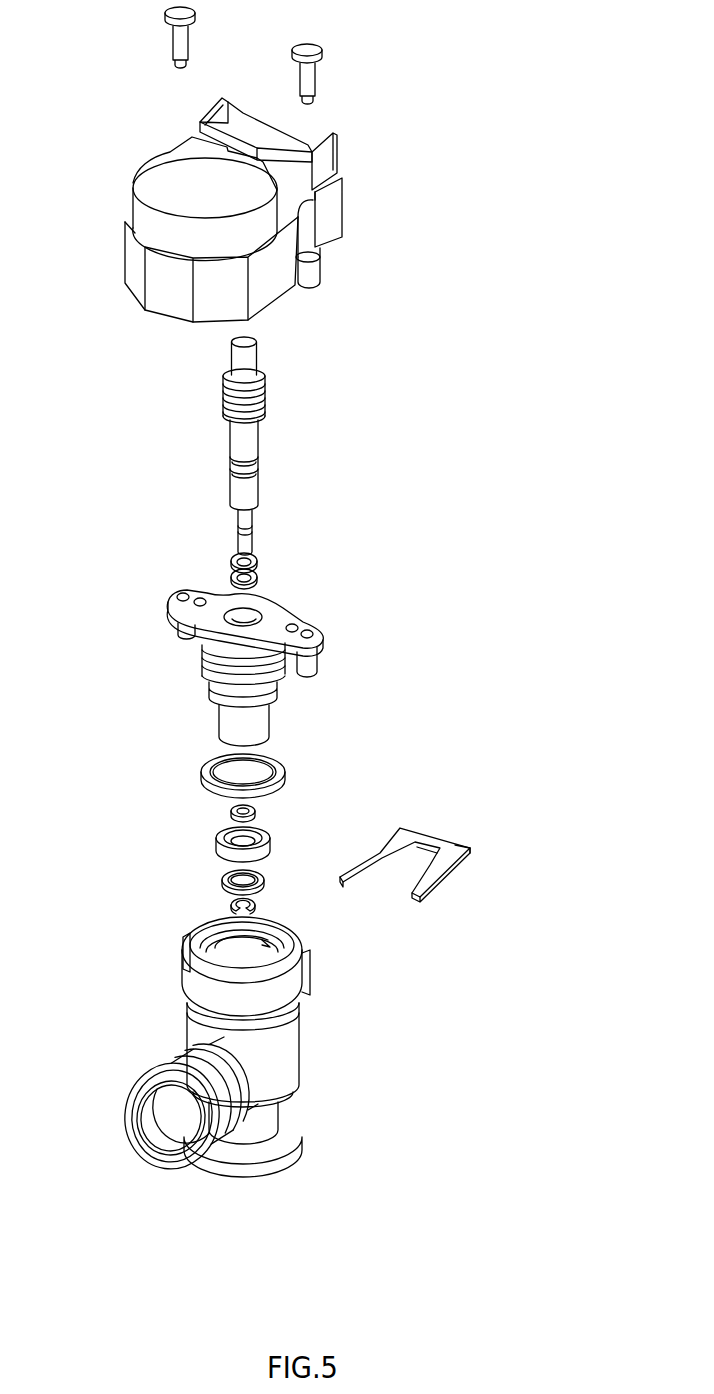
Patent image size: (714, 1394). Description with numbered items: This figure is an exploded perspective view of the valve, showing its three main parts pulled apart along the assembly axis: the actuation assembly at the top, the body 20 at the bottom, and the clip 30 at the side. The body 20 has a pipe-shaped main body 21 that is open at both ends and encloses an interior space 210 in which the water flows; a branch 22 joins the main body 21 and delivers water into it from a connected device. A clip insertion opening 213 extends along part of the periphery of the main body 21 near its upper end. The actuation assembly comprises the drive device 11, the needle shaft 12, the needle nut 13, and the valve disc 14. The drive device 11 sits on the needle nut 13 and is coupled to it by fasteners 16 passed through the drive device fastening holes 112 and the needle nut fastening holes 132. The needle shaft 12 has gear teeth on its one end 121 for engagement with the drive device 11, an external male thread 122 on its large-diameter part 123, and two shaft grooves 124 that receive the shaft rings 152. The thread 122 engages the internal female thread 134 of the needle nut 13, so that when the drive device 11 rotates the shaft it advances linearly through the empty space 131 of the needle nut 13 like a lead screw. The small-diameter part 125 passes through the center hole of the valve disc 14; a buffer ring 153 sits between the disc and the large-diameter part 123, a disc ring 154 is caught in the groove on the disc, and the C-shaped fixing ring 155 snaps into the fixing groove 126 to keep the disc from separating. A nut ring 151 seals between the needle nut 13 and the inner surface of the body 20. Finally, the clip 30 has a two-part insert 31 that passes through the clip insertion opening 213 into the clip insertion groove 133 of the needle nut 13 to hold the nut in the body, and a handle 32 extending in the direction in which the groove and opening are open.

The drive device 11 is at (284, 210).
The drive device fastening holes 112 is at (318, 258).
The needle shaft 12 is at (297, 446).
The one end of the needle shaft 121 is at (256, 355).
The external male thread 122 is at (262, 393).
The large-diameter part 123 is at (250, 438).
The shaft grooves 124 is at (254, 463).
The small-diameter part 125 is at (253, 512).
The fixing groove 126 is at (242, 529).
The needle nut 13 is at (275, 646).
The empty space 131 is at (237, 612).
The needle nut fastening holes 132 is at (312, 633).
The clip insertion groove 133 is at (204, 661).
The internal female thread 134 is at (226, 617).
The valve disc 14 is at (198, 847).
The nut ring 151 is at (309, 775).
The shaft rings 152 is at (258, 578).
The buffer ring 153 is at (216, 812).
The disc ring 154 is at (203, 881).
The fixing ring 155 is at (280, 907).
The fasteners 16 is at (338, 72).
The body 20 is at (255, 1034).
The main body 21 is at (294, 1086).
The interior space 210 is at (268, 941).
The clip insertion opening 213 is at (210, 948).
The branch 22 is at (180, 1053).
The clip 30 is at (452, 851).
The insert 31 is at (355, 867).
The handle 32 is at (468, 849).